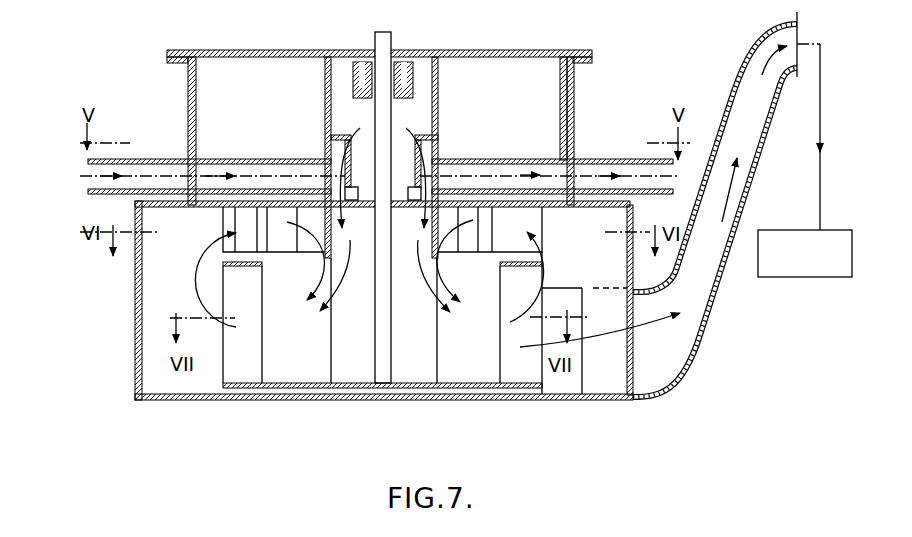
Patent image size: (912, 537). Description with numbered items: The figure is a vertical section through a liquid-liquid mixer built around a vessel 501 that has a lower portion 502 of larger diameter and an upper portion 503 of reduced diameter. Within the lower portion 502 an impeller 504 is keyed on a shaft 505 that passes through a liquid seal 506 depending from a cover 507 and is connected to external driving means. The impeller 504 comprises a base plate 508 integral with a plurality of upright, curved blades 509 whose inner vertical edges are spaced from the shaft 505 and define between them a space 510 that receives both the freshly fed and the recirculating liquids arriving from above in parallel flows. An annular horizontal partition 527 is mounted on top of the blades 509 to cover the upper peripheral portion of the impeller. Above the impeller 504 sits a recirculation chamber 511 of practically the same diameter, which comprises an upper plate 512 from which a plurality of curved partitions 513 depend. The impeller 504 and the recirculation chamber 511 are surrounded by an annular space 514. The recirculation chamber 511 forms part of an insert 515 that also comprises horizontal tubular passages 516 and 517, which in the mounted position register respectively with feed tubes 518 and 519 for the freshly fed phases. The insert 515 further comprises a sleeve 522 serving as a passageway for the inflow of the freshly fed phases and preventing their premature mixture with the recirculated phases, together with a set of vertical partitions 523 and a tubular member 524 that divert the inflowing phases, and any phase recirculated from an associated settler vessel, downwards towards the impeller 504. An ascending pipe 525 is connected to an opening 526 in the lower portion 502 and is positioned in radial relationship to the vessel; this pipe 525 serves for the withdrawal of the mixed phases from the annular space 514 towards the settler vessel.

The vessel 501 is at (133, 287).
The lower portion 502 is at (142, 317).
The upper portion 503 is at (187, 103).
The impeller 504 is at (250, 373).
The shaft 505 is at (386, 360).
The liquid seal 506 is at (372, 50).
The cover 507 is at (458, 50).
The base plate 508 is at (285, 385).
The curved blades 509 is at (338, 342).
The space 510 is at (318, 372).
The recirculation chamber 511 is at (243, 220).
The upper plate 512 is at (277, 190).
The curved partitions 513 is at (379, 231).
The annular space 514 is at (150, 375).
The insert 515 is at (272, 76).
The horizontal tubular passage 516 is at (245, 158).
The horizontal tubular passage 517 is at (523, 158).
The feed tube 518 is at (145, 159).
The feed tube 519 is at (598, 158).
The sleeve 522 is at (385, 281).
The vertical partitions 523 is at (340, 190).
The tubular member 524 is at (355, 135).
The ascending pipe 525 is at (716, 327).
The opening 526 is at (560, 383).
The annular horizontal partition 527 is at (800, 278).